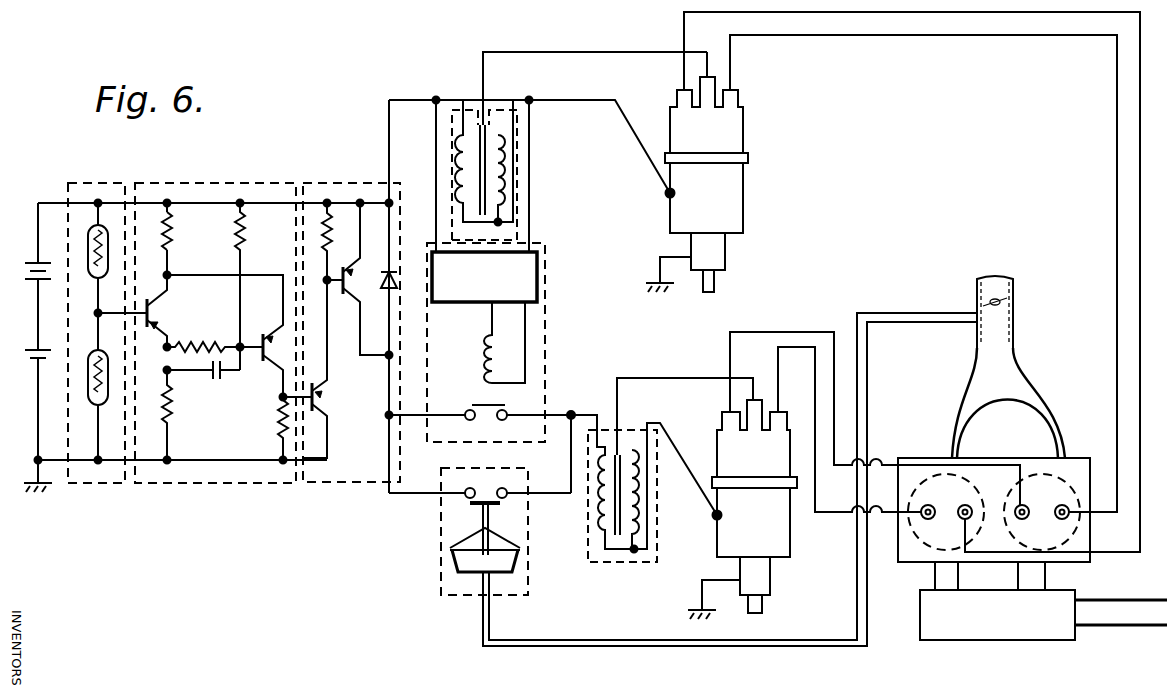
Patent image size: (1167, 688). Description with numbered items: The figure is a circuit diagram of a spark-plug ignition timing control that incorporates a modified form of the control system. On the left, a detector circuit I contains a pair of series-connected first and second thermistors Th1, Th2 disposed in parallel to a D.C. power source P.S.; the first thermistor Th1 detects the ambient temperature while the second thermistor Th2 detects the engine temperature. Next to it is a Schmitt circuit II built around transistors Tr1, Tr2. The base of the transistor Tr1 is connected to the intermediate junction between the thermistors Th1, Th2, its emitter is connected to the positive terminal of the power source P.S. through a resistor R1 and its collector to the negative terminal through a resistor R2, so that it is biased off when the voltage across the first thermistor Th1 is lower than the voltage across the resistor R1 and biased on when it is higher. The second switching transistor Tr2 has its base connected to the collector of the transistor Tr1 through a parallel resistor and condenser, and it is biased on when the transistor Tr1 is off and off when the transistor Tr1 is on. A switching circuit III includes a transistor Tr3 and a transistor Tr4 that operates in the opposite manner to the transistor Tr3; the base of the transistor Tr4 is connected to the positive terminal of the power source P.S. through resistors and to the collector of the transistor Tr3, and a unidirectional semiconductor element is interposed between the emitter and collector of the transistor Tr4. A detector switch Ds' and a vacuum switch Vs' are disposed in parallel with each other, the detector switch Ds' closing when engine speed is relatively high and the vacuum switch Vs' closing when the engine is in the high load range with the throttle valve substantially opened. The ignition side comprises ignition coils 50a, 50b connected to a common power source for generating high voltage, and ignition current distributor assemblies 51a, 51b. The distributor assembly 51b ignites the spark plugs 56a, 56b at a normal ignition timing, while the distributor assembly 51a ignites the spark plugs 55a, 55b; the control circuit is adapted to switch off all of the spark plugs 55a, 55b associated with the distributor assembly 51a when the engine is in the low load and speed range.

The detector circuit I is at (72, 484).
The Schmitt circuit II is at (200, 484).
The switching circuit III is at (346, 484).
The D.C. power source P.S. is at (47, 347).
The first thermistor Th1 is at (100, 225).
The second thermistor Th2 is at (94, 405).
The resistor R1 is at (172, 240).
The resistor R2 is at (172, 403).
The transistor Tr1 is at (178, 322).
The second switching transistor Tr2 is at (280, 362).
The transistor Tr3 is at (322, 402).
The transistor Tr4 is at (355, 278).
The detector switch Ds' is at (495, 271).
The vacuum switch Vs' is at (678, 479).
The ignition coil 50a is at (655, 548).
The ignition coil 50b is at (470, 108).
The ignition current distributor assembly 51a is at (722, 414).
The ignition current distributor assembly 51b is at (744, 97).
The spark plug 55a is at (1028, 518).
The spark plug 55b is at (926, 520).
The spark plug 56a is at (1064, 505).
The spark plug 56b is at (965, 505).